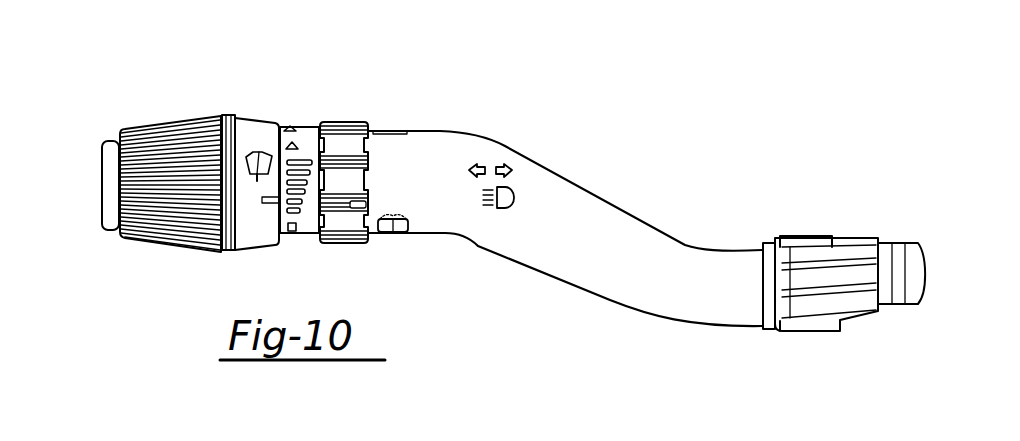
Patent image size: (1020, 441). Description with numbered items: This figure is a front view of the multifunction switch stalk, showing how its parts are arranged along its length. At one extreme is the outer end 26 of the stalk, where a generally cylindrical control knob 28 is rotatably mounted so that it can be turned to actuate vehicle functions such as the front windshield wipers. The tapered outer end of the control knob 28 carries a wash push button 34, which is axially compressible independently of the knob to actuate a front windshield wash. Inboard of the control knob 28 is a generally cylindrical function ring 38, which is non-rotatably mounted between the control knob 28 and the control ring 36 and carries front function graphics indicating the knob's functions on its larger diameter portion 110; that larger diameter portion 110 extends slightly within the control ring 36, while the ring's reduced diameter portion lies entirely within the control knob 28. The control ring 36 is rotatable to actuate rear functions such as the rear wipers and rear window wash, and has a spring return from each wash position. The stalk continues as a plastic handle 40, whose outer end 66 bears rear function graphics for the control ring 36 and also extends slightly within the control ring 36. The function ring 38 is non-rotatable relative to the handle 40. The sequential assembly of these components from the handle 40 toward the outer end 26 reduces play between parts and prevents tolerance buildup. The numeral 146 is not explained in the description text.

The outer end 26 is at (102, 166).
The wash push button 34 is at (114, 132).
The control knob 28 is at (232, 106).
The function ring 38 is at (281, 115).
The larger diameter portion 110 is at (312, 128).
The control ring 36 is at (357, 108).
The outer end 66 is at (375, 129).
The handle 40 is at (522, 142).
The connector 146 is at (631, 12).